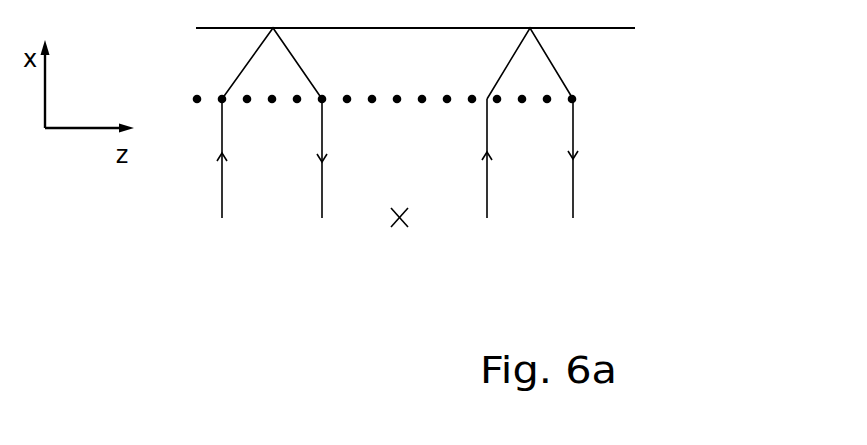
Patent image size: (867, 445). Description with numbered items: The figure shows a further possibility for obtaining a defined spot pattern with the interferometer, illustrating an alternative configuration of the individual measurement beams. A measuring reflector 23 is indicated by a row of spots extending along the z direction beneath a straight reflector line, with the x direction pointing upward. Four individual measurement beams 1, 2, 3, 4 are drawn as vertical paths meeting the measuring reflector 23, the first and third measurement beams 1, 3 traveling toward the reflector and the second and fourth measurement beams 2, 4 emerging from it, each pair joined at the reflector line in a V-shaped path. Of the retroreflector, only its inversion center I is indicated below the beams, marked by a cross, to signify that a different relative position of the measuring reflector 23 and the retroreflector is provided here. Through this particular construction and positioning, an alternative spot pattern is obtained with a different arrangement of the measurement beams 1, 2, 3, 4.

The measurement beam 1 is at (221, 176).
The measurement beam 2 is at (326, 176).
The measurement beam 3 is at (487, 176).
The measurement beam 4 is at (577, 176).
The measuring reflector 23 is at (637, 74).
The inversion center I is at (399, 219).